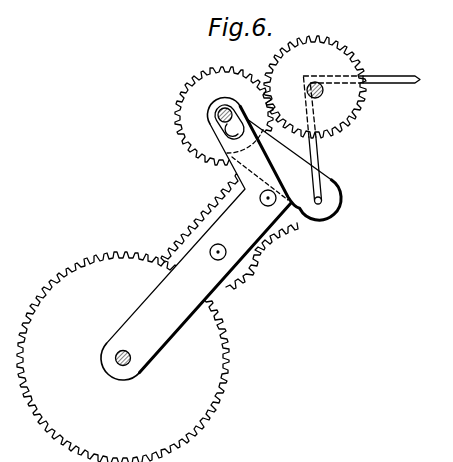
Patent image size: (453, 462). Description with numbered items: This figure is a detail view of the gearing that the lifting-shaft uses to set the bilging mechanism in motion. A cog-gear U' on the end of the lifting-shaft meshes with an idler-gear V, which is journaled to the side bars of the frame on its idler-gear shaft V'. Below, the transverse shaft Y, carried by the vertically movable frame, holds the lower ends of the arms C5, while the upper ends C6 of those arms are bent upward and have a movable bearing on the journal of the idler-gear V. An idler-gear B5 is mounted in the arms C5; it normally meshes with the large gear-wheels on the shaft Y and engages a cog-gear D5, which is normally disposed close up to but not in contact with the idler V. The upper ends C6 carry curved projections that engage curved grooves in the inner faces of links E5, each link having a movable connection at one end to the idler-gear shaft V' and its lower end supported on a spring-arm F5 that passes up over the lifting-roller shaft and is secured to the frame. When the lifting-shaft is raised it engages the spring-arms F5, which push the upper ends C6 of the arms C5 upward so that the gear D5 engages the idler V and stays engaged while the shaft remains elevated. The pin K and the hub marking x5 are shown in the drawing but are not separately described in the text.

The transverse shaft Y is at (128, 364).
The idler-gear V is at (224, 108).
The idler-gear shaft V' is at (192, 112).
The upper end of arm C6 is at (212, 123).
The arm C5 is at (196, 238).
The pivot hub x5 is at (152, 368).
The cog-gear U' is at (321, 87).
The pin K is at (325, 115).
The spring-arm F5 is at (408, 64).
The link E5 is at (292, 165).
The cog-gear D5 is at (313, 240).
The idler-gear B5 is at (250, 280).